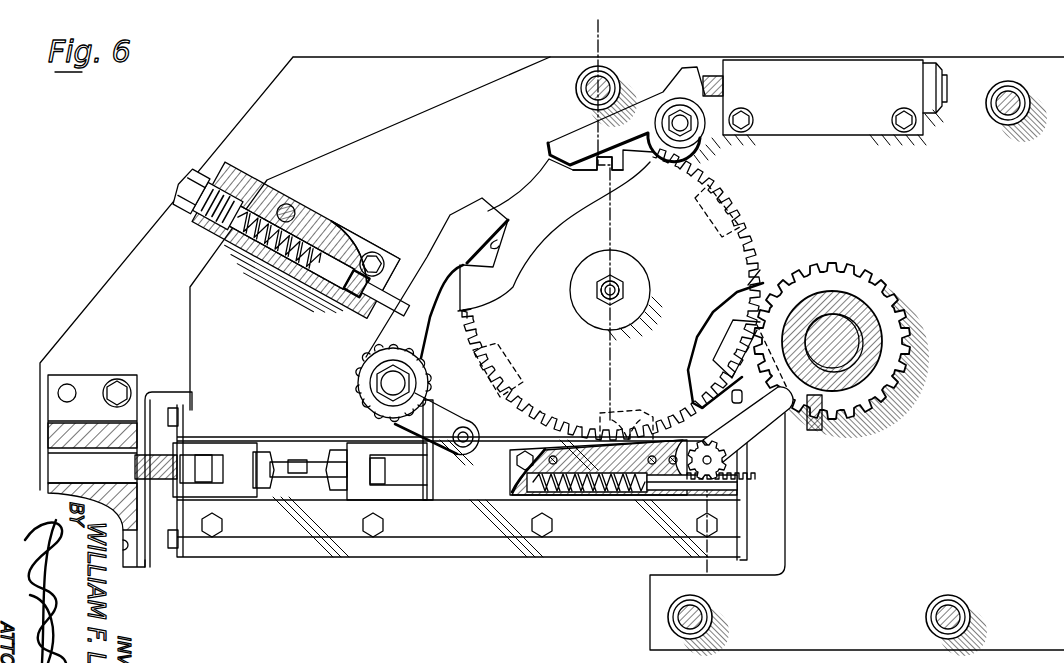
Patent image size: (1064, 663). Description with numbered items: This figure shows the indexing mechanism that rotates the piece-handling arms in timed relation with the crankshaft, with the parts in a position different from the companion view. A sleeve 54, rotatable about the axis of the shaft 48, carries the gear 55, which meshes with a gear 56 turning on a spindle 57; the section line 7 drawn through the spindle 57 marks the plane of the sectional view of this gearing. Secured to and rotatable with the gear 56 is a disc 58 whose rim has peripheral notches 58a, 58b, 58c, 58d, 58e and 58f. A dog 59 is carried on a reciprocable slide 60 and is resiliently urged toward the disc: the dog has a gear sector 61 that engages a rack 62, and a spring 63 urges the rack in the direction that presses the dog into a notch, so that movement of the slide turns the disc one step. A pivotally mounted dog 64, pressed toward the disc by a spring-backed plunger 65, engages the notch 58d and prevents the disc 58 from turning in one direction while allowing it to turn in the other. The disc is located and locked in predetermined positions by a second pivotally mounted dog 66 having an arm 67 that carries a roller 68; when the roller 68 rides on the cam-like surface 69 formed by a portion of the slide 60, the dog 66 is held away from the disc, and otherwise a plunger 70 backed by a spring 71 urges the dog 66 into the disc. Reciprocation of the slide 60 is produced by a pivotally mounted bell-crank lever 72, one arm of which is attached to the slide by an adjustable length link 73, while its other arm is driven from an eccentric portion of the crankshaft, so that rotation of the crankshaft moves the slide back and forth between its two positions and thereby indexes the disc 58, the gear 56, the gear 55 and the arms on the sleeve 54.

The section line 7- 7 is at (620, 28).
The shaft 48 is at (838, 340).
The sleeve 54 is at (817, 430).
The gear 55 is at (808, 268).
The gear 56 is at (742, 262).
The spindle 57 is at (615, 288).
The disc 58 is at (518, 192).
The peripheral notch 58a is at (730, 355).
The peripheral notch 58b is at (708, 235).
The peripheral notch 58c is at (578, 177).
The peripheral notch 58d is at (498, 245).
The peripheral notch 58e is at (512, 356).
The peripheral notch 58f is at (628, 418).
The dog 59 is at (742, 421).
The reciprocable slide 60 is at (495, 440).
The gear sector 61 is at (722, 458).
The rack 62 is at (695, 479).
The spring 63 is at (608, 490).
The pivotally mounted dog 64 is at (560, 142).
The plunger 65 is at (712, 75).
The pivotally mounted dog 66 is at (444, 221).
The arm 67 is at (437, 412).
The roller 68 is at (466, 426).
The cam-like surface 69 is at (535, 455).
The plunger 70 is at (378, 320).
The spring 71 is at (262, 252).
The bell-crank lever 72 is at (152, 452).
The adjustable length link 73 is at (237, 462).